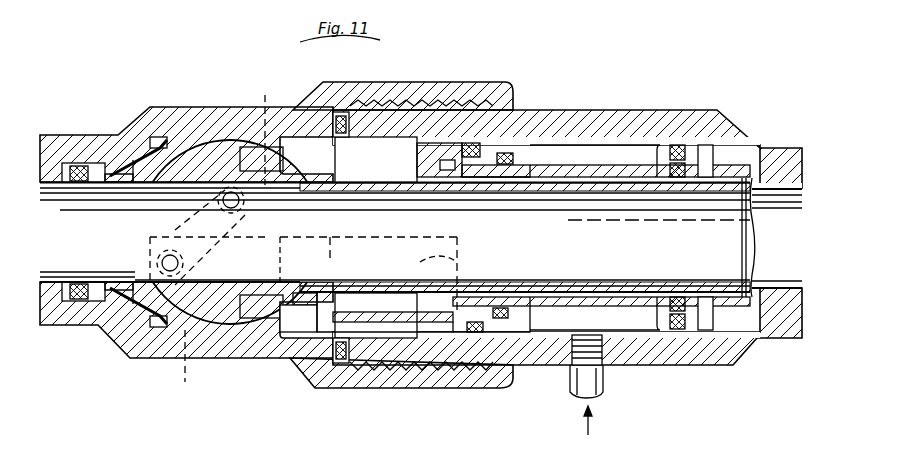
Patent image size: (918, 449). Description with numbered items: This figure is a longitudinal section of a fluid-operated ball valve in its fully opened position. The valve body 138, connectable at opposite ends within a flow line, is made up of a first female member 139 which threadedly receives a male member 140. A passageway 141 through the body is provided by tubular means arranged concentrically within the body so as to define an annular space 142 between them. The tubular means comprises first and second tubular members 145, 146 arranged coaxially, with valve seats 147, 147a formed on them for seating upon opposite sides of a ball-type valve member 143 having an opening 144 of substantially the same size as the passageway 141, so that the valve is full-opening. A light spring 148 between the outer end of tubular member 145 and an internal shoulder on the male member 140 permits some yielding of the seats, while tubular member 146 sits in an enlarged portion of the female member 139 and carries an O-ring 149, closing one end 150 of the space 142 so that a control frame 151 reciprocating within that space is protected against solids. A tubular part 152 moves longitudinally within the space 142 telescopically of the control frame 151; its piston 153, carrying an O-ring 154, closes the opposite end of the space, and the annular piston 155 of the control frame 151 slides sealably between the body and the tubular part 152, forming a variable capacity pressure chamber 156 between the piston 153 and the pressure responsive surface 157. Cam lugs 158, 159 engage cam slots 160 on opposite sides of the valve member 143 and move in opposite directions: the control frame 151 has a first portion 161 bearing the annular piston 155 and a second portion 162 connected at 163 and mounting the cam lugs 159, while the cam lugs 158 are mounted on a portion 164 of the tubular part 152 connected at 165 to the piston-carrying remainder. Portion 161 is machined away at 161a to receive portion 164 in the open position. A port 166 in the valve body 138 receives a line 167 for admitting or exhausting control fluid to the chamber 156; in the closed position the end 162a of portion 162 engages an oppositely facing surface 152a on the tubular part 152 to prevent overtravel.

The valve body 138 is at (434, 390).
The first female member 139 is at (133, 107).
The male member 140 is at (598, 110).
The passageway 141 is at (490, 292).
The annular space 142 is at (635, 148).
The ball-type valve member 143 is at (201, 142).
The opening 144 is at (233, 281).
The first tubular member 145 is at (607, 285).
The second tubular member 146 is at (72, 282).
The valve seat 147 is at (283, 167).
The valve seat 147a is at (152, 357).
The light spring 148 is at (745, 242).
The O-ring 149 is at (78, 165).
The closed end of space 150 is at (163, 140).
The control frame 151 is at (357, 332).
The tubular part 152 is at (542, 314).
The oppositely facing surface 152a is at (432, 268).
The piston 153 is at (677, 298).
The O-ring 154 is at (677, 143).
The annular piston 155 is at (512, 142).
The variable capacity pressure chamber 156 is at (645, 330).
The pressure responsive surface 157 is at (523, 152).
The cam lugs 158 is at (257, 127).
The cam lugs 159 is at (188, 214).
The cam slots 160 is at (272, 246).
The first portion of control frame 161 is at (392, 312).
The machined-away region 161a is at (452, 236).
The second portion of control frame 162 is at (181, 367).
The end of portion 162 162a is at (358, 236).
The connection 163 is at (300, 288).
The portion of tubular part 164 is at (376, 195).
The connection 165 is at (437, 165).
The port 166 is at (604, 352).
The line 167 is at (605, 390).